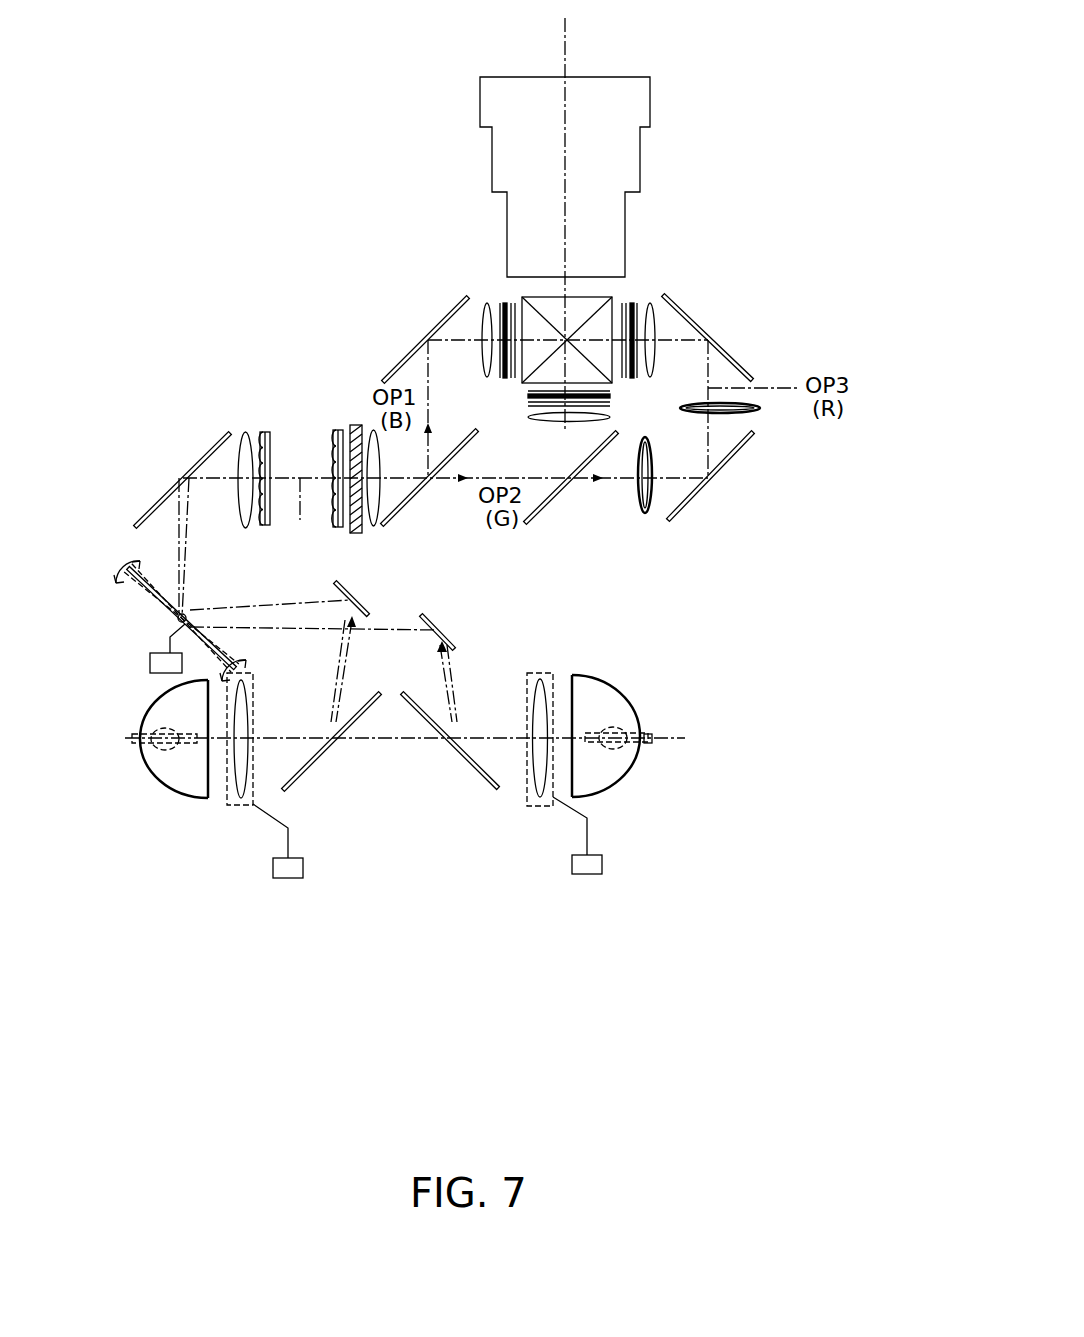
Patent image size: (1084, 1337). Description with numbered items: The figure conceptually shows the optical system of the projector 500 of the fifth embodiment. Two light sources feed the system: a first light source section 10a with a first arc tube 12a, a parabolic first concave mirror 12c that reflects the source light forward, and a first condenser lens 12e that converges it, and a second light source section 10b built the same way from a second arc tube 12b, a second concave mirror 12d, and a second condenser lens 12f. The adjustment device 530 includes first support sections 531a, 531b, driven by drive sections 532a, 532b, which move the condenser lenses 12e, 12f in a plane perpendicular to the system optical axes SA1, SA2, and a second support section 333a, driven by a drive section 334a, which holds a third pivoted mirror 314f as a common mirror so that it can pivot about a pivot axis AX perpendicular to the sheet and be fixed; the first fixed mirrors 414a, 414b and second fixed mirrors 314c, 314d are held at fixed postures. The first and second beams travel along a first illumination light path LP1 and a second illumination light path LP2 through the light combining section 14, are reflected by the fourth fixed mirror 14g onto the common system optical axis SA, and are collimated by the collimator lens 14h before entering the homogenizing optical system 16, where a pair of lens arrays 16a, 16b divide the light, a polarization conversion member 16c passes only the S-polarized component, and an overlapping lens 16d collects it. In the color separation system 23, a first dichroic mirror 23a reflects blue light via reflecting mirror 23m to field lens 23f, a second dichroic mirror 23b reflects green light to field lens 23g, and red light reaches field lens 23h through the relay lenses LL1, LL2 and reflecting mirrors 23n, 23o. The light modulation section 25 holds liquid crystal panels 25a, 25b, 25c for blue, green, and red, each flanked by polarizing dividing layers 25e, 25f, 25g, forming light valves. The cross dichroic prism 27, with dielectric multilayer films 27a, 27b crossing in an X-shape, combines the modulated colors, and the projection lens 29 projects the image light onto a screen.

The projector 500 is at (808, 36).
The projection lens 29 is at (522, 148).
The cross dichroic prism 27 is at (598, 284).
The dielectric multilayer film 27a is at (607, 302).
The dielectric multilayer film 27b is at (497, 287).
The light modulation section 25 is at (530, 298).
The liquid crystal panel 25a is at (490, 352).
The liquid crystal panel 25b is at (528, 398).
The liquid crystal panel 25c is at (652, 322).
The polarizing dividing layers 25e is at (507, 378).
The polarizing dividing layers 25f is at (612, 394).
The polarizing dividing layers 25g is at (632, 378).
The color separation system 23 is at (735, 500).
The first dichroic mirror 23a is at (410, 498).
The second dichroic mirror 23b is at (546, 501).
The field lens 23f is at (484, 318).
The field lens 23g is at (540, 422).
The field lens 23h is at (662, 352).
The reflecting mirror 23m is at (405, 355).
The reflecting mirror 23n is at (733, 456).
The reflecting mirror 23o is at (740, 366).
The first lens LL1 is at (646, 513).
The second lens LL2 is at (760, 410).
The homogenizing optical system 16 is at (305, 375).
The lens array 16a is at (266, 430).
The lens array 16b is at (337, 428).
The polarization conversion member 16c is at (356, 425).
The overlapping lens 16d is at (373, 528).
The light combining section 14 is at (148, 548).
The fourth fixed mirror 14g is at (165, 494).
The collimator lens 14h is at (245, 430).
The system optical axis SA is at (299, 527).
The system optical axis SA1 is at (278, 603).
The system optical axis SA2 is at (297, 632).
The pivot axis AX is at (192, 607).
The first illumination light path LP1 is at (354, 659).
The second illumination light path LP2 is at (450, 668).
The third pivoted mirror 314f is at (155, 597).
The second support section 333a is at (178, 621).
The drive section 334a is at (150, 673).
The second fixed mirror 314c is at (362, 597).
The second fixed mirror 314d is at (443, 633).
The first fixed mirror 414a is at (296, 790).
The first fixed mirror 414b is at (487, 787).
The first light source section 10a is at (228, 825).
The second light source section 10b is at (514, 822).
The first arc tube 12a is at (155, 750).
The second arc tube 12b is at (620, 745).
The first concave mirror 12c is at (178, 794).
The second concave mirror 12d is at (602, 790).
The first condenser lens 12e is at (245, 800).
The second condenser lens 12f is at (546, 800).
The first support section 531a is at (228, 805).
The first support section 531b is at (553, 672).
The drive section 532a is at (288, 878).
The drive section 532b is at (587, 874).
The adjustment device 530 is at (258, 900).